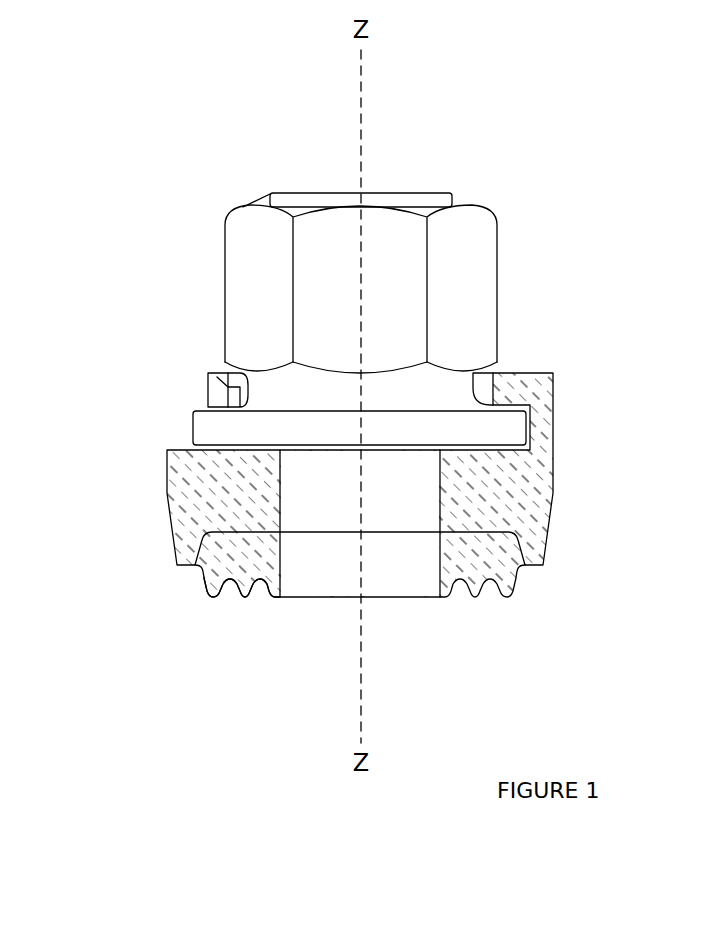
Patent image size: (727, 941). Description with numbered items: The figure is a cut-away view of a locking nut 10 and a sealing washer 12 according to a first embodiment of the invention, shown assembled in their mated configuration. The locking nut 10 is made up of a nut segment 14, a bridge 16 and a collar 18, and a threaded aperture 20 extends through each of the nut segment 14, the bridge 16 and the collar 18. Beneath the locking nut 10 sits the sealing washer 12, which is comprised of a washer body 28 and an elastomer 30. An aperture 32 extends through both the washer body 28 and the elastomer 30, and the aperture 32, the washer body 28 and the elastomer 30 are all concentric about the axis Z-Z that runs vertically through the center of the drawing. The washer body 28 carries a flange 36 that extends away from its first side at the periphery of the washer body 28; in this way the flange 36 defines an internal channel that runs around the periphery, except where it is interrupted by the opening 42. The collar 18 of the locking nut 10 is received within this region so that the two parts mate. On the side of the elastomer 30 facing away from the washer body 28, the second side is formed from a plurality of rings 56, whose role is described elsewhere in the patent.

The locking nut 10 is at (358, 430).
The sealing washer 12 is at (358, 538).
The nut segment 14 is at (361, 283).
The bridge 16 is at (361, 385).
The collar 18 is at (359, 428).
The threaded aperture 20 is at (352, 192).
The washer body 28 is at (555, 495).
The elastomer 30 is at (523, 580).
The aperture 32 is at (367, 603).
The flange 36 is at (507, 388).
The opening 42 is at (208, 407).
The rings 56 is at (242, 597).